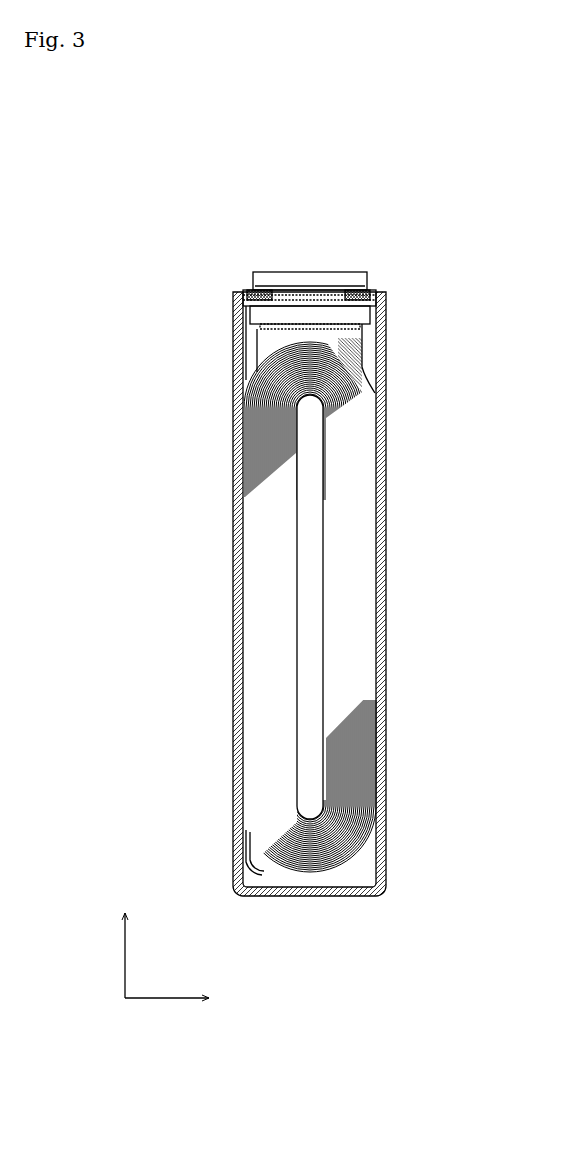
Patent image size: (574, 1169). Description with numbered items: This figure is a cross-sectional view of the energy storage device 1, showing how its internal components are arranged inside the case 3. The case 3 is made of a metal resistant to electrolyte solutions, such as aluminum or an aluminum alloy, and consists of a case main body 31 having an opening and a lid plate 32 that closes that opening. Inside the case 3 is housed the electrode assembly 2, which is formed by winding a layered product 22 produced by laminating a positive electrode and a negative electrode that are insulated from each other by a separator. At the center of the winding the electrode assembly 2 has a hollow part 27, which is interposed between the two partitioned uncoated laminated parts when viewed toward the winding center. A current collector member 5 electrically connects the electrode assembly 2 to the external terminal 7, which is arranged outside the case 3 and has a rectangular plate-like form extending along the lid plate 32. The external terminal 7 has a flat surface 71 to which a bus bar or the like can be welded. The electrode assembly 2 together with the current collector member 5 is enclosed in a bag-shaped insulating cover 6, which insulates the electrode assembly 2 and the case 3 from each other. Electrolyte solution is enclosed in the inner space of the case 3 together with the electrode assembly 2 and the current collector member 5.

The energy storage device 1 is at (418, 188).
The electrode assembly 2 is at (350, 338).
The layered product 22 is at (355, 357).
The hollow part 27 is at (312, 622).
The case 3 is at (125, 281).
The case main body 31 is at (238, 342).
The lid plate 32 is at (238, 292).
The current collector member 5 is at (250, 353).
The insulating cover 6 is at (257, 864).
The external terminal 7 is at (302, 272).
The surface 71 is at (320, 270).